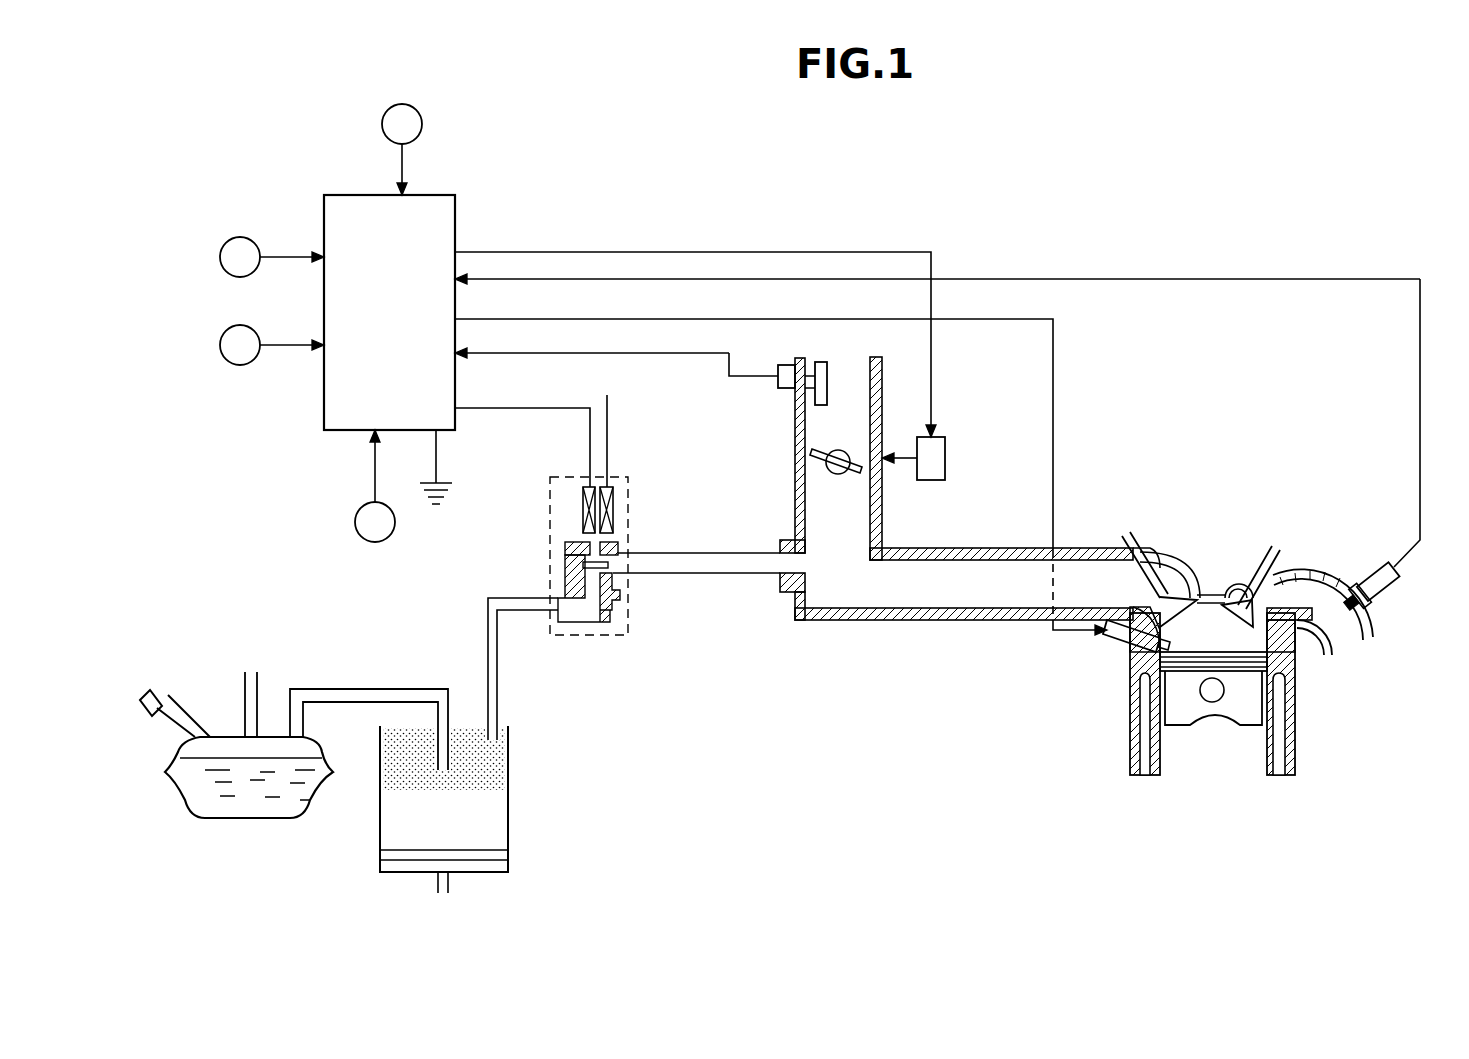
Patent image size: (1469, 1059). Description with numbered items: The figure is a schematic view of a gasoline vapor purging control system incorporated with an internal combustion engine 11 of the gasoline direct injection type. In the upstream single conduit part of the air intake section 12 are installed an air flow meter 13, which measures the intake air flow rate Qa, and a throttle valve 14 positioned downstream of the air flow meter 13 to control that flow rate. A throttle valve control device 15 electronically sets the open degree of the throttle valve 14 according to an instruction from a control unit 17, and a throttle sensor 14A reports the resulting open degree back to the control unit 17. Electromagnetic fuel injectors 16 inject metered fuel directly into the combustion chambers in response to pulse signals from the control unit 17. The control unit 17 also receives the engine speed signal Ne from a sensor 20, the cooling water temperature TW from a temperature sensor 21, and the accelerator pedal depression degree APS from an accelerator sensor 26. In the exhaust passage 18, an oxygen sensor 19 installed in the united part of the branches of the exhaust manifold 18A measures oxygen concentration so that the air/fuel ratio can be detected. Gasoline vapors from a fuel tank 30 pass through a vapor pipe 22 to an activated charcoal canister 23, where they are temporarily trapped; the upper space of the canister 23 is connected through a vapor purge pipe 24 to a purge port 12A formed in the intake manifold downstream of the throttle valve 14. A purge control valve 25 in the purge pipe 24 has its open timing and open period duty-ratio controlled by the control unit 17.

The internal combustion engine 11 is at (1100, 718).
The air intake section 12 is at (878, 585).
The purge port 12A is at (805, 563).
The air flow meter 13 is at (795, 395).
The throttle valve 14 is at (827, 467).
The throttle sensor 14A is at (355, 518).
The throttle valve control device 15 is at (945, 457).
The fuel injector 16 is at (1112, 641).
The control unit 17 is at (455, 214).
The exhaust passage 18 is at (1347, 630).
The exhaust manifold 18A is at (1302, 568).
The oxygen sensor 19 is at (1370, 567).
The engine speed sensor 20 is at (240, 237).
The temperature sensor 21 is at (240, 365).
The vapor pipe 22 is at (395, 689).
The activated charcoal canister 23 is at (510, 800).
The vapor purge pipe 24 is at (695, 575).
The purge control valve 25 is at (630, 522).
The accelerator sensor 26 is at (422, 122).
The fuel tank 30 is at (225, 820).